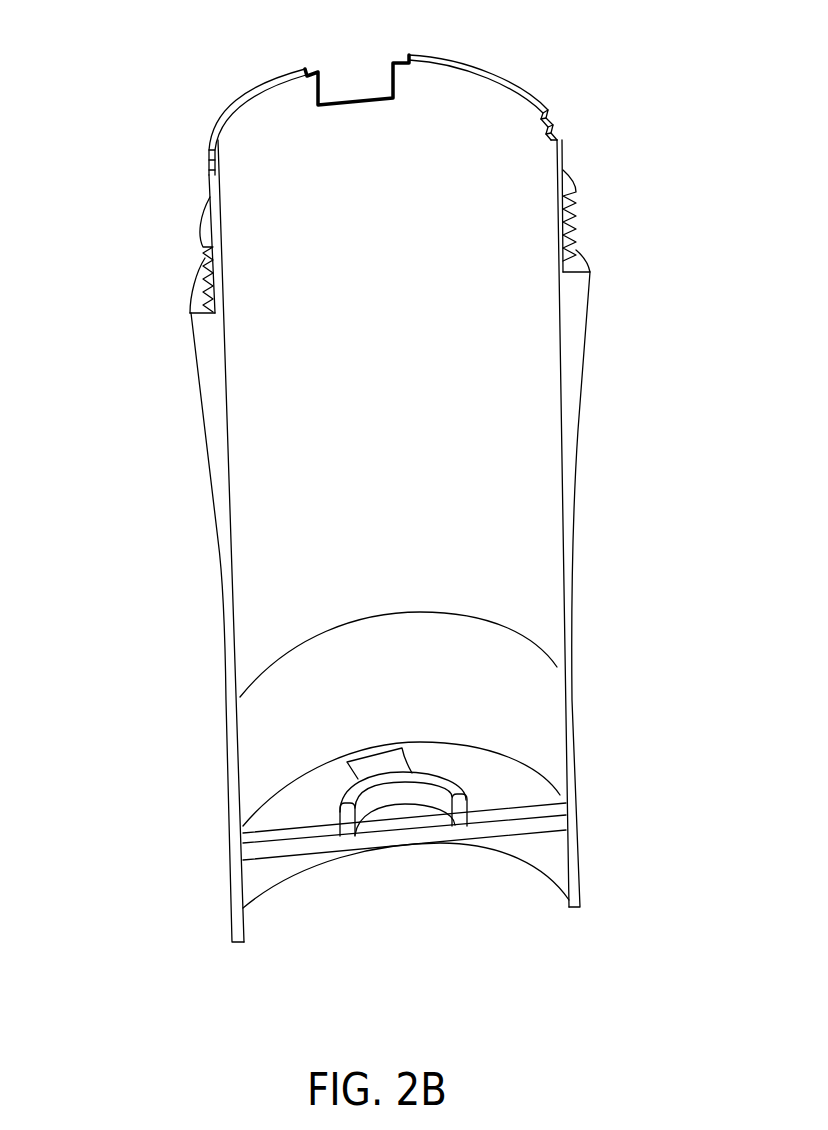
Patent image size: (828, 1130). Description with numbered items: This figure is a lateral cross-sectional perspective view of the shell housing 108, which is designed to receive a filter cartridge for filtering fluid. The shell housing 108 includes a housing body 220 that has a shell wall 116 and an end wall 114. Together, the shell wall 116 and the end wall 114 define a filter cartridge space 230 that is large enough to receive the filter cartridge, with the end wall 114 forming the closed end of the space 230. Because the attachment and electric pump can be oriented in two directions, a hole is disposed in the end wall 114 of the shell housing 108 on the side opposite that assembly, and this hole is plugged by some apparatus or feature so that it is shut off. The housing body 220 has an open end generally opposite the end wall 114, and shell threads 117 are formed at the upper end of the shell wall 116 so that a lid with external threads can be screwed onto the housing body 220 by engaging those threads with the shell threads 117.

The shell housing 108 is at (377, 496).
The end wall 114 is at (405, 822).
The shell wall 116 is at (216, 542).
The shell threads 117 is at (205, 247).
The housing body 220 is at (313, 841).
The filter cartridge space 230 is at (490, 562).